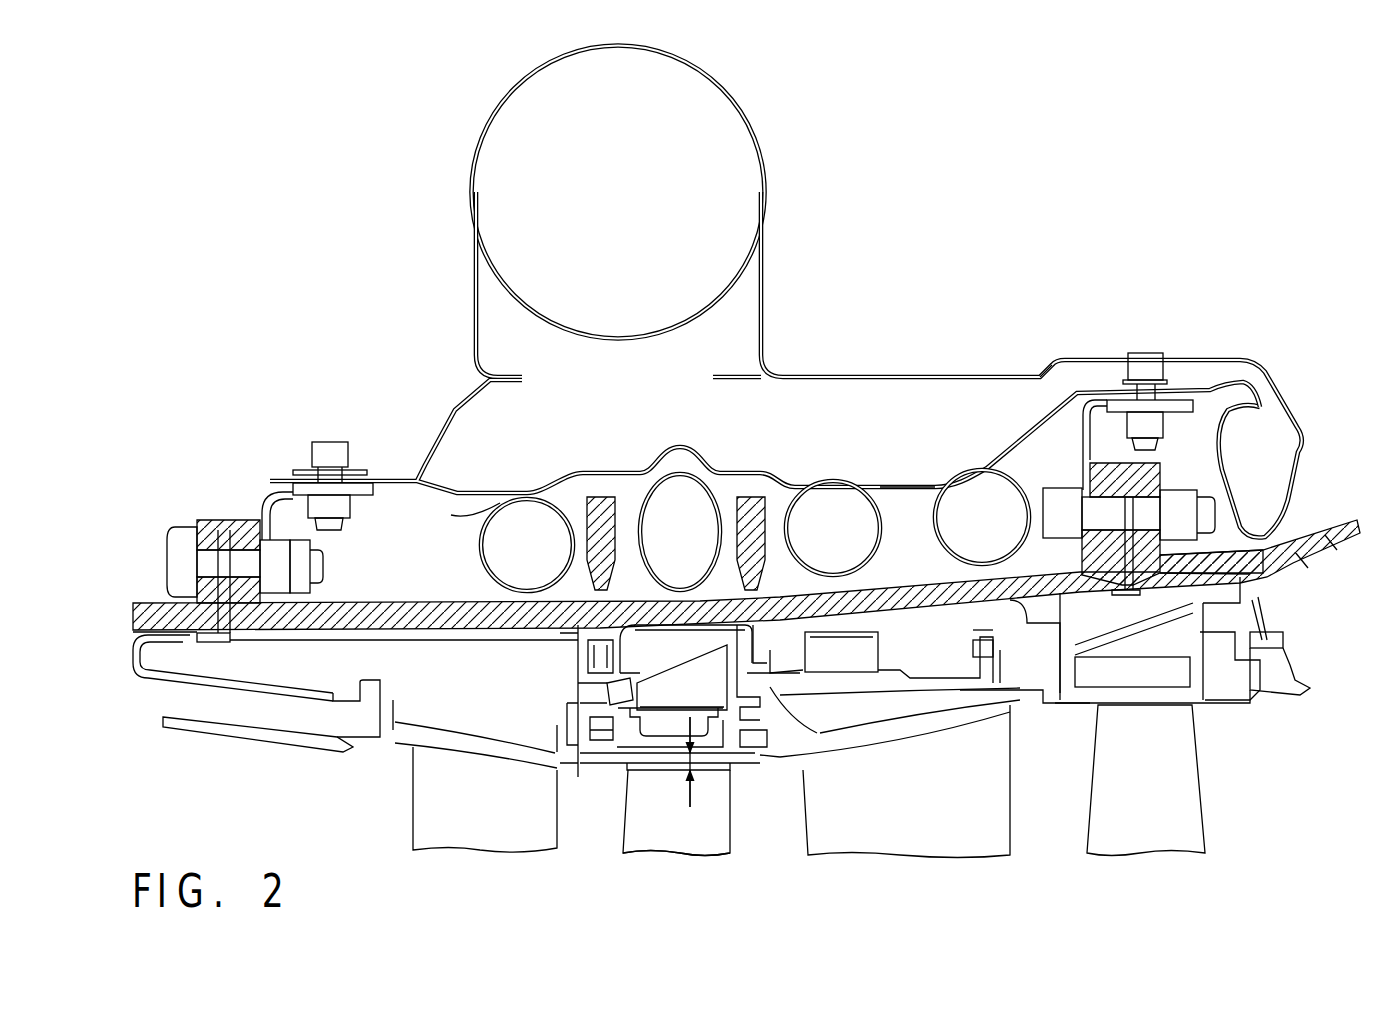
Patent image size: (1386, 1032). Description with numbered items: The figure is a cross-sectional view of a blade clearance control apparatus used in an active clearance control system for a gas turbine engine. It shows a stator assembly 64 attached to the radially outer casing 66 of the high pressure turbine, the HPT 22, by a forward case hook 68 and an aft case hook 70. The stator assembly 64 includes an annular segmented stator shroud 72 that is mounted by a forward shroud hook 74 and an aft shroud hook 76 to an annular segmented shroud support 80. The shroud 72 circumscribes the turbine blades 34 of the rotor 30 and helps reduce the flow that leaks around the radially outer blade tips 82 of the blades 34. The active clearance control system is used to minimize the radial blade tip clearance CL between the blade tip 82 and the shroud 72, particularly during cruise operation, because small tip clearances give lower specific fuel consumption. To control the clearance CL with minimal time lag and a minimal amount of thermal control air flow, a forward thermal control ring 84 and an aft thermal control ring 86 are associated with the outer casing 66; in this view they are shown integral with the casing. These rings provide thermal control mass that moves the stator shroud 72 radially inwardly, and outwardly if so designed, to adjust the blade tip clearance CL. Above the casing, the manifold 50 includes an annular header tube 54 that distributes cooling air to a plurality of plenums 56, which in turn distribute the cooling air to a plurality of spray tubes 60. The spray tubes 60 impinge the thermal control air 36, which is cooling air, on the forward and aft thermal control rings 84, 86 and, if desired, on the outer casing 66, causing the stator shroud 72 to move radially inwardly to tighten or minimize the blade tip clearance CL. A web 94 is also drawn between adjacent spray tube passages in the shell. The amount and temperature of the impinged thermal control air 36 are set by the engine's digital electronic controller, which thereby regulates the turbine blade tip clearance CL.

The HPT 22 is at (540, 872).
The rotor 30 is at (733, 830).
The turbine blades 34 is at (655, 850).
The thermal control air 36 is at (573, 590).
The manifold 50 is at (812, 297).
The annular header tube 54 is at (723, 90).
The plenums 56 is at (562, 402).
The spray tubes 60 is at (1000, 472).
The stator assembly 64 is at (518, 685).
The radially outer casing 66 is at (378, 603).
The forward case hook 68 is at (590, 660).
The aft case hook 70 is at (803, 695).
The annular segmented stator shroud 72 is at (748, 762).
The forward shroud hook 74 is at (613, 733).
The aft shroud hook 76 is at (790, 760).
The annular segmented shroud support 80 is at (715, 680).
The radially outer blade tips 82 is at (633, 772).
The forward thermal control ring 84 is at (605, 497).
The aft thermal control ring 86 is at (752, 497).
The web 94 is at (937, 546).
The radial blade tip clearance CL is at (690, 797).